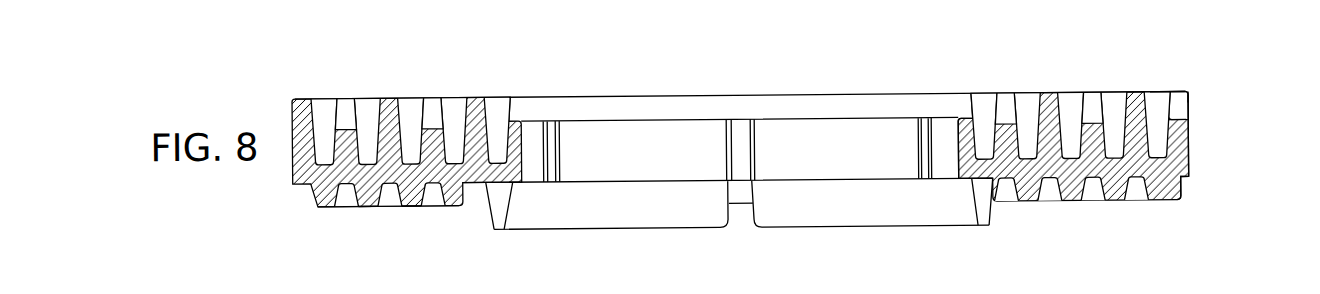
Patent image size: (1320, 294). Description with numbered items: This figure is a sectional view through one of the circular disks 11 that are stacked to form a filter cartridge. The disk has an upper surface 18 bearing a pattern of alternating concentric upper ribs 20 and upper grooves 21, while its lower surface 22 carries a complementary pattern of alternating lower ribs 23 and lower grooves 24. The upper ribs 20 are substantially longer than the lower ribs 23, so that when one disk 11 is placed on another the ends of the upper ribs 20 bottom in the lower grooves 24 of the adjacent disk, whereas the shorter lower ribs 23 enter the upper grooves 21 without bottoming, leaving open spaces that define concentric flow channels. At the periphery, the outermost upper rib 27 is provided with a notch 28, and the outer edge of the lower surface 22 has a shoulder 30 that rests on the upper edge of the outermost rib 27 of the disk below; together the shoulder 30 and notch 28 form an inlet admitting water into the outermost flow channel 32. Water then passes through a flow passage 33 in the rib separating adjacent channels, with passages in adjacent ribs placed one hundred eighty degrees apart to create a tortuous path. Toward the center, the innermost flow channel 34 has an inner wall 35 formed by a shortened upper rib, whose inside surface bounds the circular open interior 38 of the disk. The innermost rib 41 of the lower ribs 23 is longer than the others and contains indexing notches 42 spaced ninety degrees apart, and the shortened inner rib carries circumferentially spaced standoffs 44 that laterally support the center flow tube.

The disk 11 is at (1248, 110).
The upper surface 18 is at (648, 89).
The upper ribs 20 is at (312, 120).
The upper grooves 21 is at (363, 118).
The lower surface 22 is at (430, 211).
The lower ribs 23 is at (397, 208).
The lower grooves 24 is at (341, 204).
The outermost upper rib 27 is at (1190, 118).
The notch 28 is at (1185, 130).
The shoulder 30 is at (1182, 190).
The outermost flow channel 32 is at (1190, 105).
The flow passage 33 is at (1093, 110).
The innermost flow channel 34 is at (983, 140).
The inner wall 35 is at (957, 144).
The circular open interior 38 is at (673, 141).
The innermost rib 41 is at (617, 208).
The indexing notches 42 is at (503, 214).
The standoffs 44 is at (742, 156).